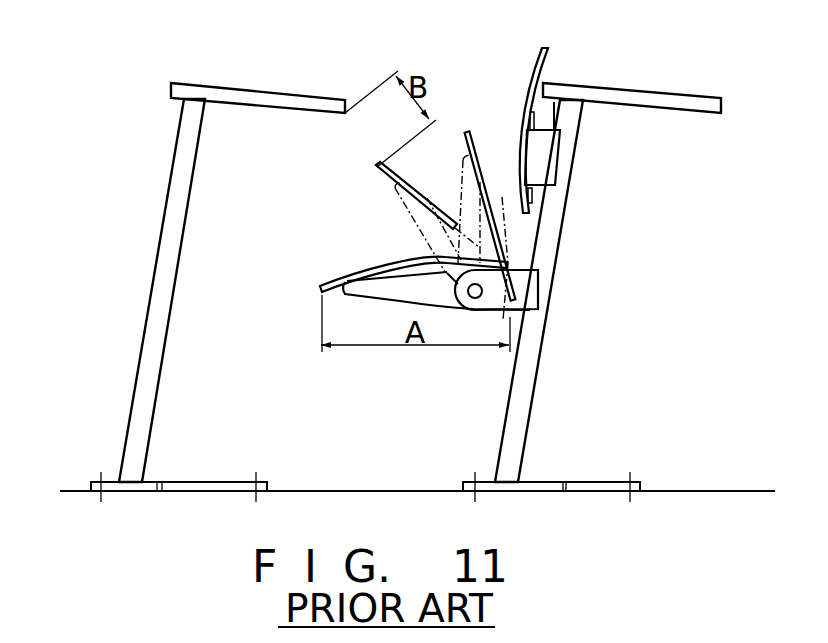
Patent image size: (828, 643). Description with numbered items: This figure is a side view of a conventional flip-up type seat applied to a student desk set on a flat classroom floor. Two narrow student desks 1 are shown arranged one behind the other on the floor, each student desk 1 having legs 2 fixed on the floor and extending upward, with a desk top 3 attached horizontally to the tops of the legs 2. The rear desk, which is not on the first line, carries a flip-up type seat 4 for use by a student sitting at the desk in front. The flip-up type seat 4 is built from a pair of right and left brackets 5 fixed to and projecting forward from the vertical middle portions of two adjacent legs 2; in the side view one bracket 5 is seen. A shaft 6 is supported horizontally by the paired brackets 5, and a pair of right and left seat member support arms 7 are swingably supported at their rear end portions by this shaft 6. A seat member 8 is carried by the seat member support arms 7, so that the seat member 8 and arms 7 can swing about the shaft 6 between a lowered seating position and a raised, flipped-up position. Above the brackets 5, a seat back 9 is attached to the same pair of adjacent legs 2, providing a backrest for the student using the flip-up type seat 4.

The student desk 1 is at (176, 137).
The leg 2 is at (168, 232).
The desk top 3 is at (277, 97).
The flip-up type seat 4 is at (335, 272).
The bracket 5 is at (530, 291).
The shaft 6 is at (477, 299).
The seat member support arm 7 is at (383, 295).
The seat member 8 is at (397, 263).
The seat back 9 is at (529, 80).